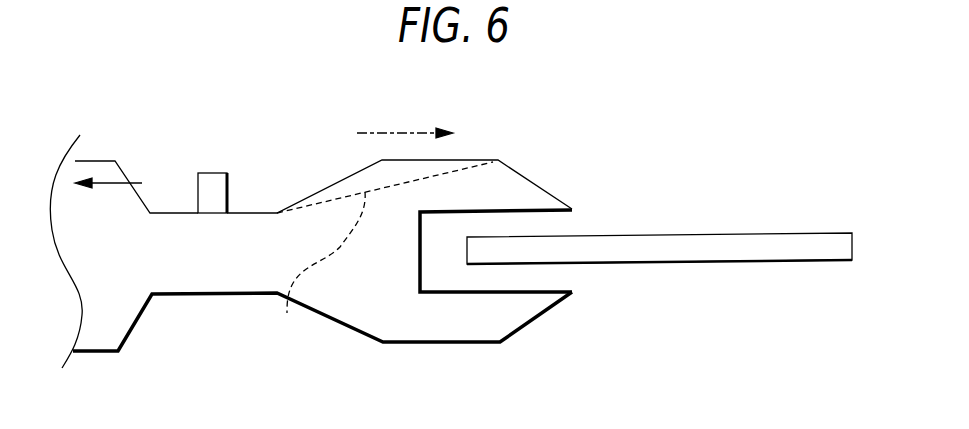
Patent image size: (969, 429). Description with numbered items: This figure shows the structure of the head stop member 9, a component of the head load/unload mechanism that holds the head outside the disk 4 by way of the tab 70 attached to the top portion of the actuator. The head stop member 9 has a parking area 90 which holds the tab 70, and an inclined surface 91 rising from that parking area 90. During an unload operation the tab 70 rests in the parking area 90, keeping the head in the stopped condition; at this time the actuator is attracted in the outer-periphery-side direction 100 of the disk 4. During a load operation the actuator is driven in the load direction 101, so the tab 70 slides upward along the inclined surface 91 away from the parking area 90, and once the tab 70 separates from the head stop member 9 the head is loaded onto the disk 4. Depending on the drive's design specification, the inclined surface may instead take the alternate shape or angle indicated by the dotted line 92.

The disk 4 is at (658, 235).
The head stop member 9 is at (532, 135).
The tab 70 is at (213, 173).
The parking area 90 is at (215, 215).
The inclined surface 91 is at (330, 187).
The dotted line showing alternate inclined surface 92 is at (321, 271).
The outer-periphery-side direction 100 is at (140, 183).
The load direction 101 is at (393, 133).